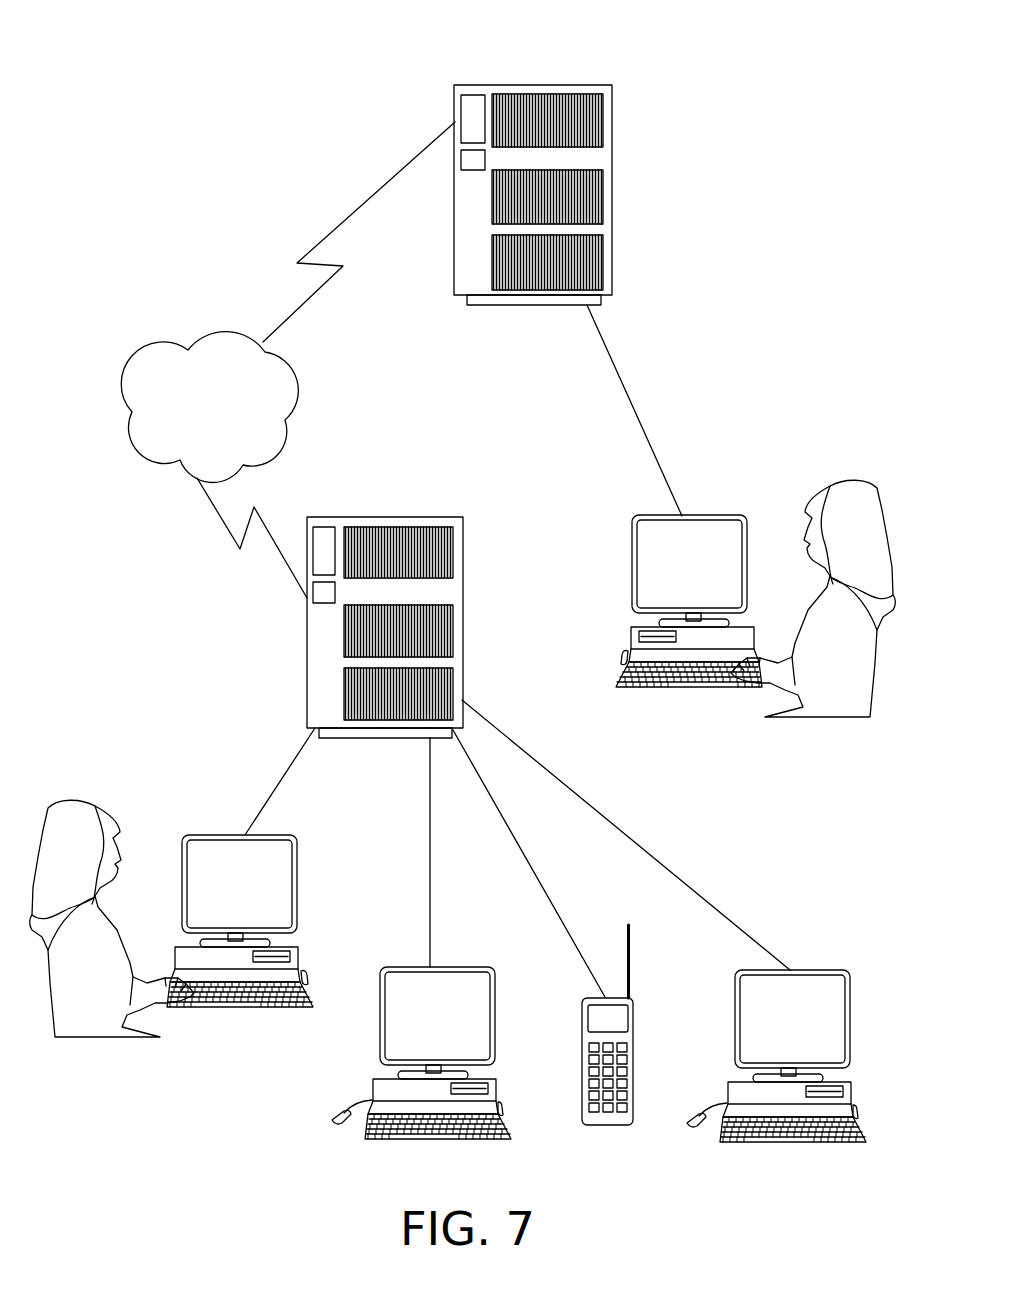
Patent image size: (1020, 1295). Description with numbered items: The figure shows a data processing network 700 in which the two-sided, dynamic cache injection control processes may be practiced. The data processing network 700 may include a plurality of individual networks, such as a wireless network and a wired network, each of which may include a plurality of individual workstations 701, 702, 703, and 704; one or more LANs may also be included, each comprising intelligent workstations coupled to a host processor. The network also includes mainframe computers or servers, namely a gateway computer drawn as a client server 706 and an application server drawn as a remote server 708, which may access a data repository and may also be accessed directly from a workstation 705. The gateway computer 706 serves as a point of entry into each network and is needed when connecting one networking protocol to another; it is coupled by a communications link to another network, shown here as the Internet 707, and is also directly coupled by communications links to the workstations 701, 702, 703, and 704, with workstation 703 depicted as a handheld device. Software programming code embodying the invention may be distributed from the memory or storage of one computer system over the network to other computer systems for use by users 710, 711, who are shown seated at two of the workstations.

The data processing network 700 is at (150, 600).
The workstation 701 is at (258, 900).
The workstation 702 is at (456, 1032).
The workstation 703 is at (633, 1048).
The workstation 704 is at (811, 1035).
The workstation 705 is at (708, 580).
The gateway computer 706 is at (463, 573).
The Internet 707 is at (163, 352).
The remote server 708 is at (612, 142).
The user 710 is at (85, 810).
The user 711 is at (852, 502).